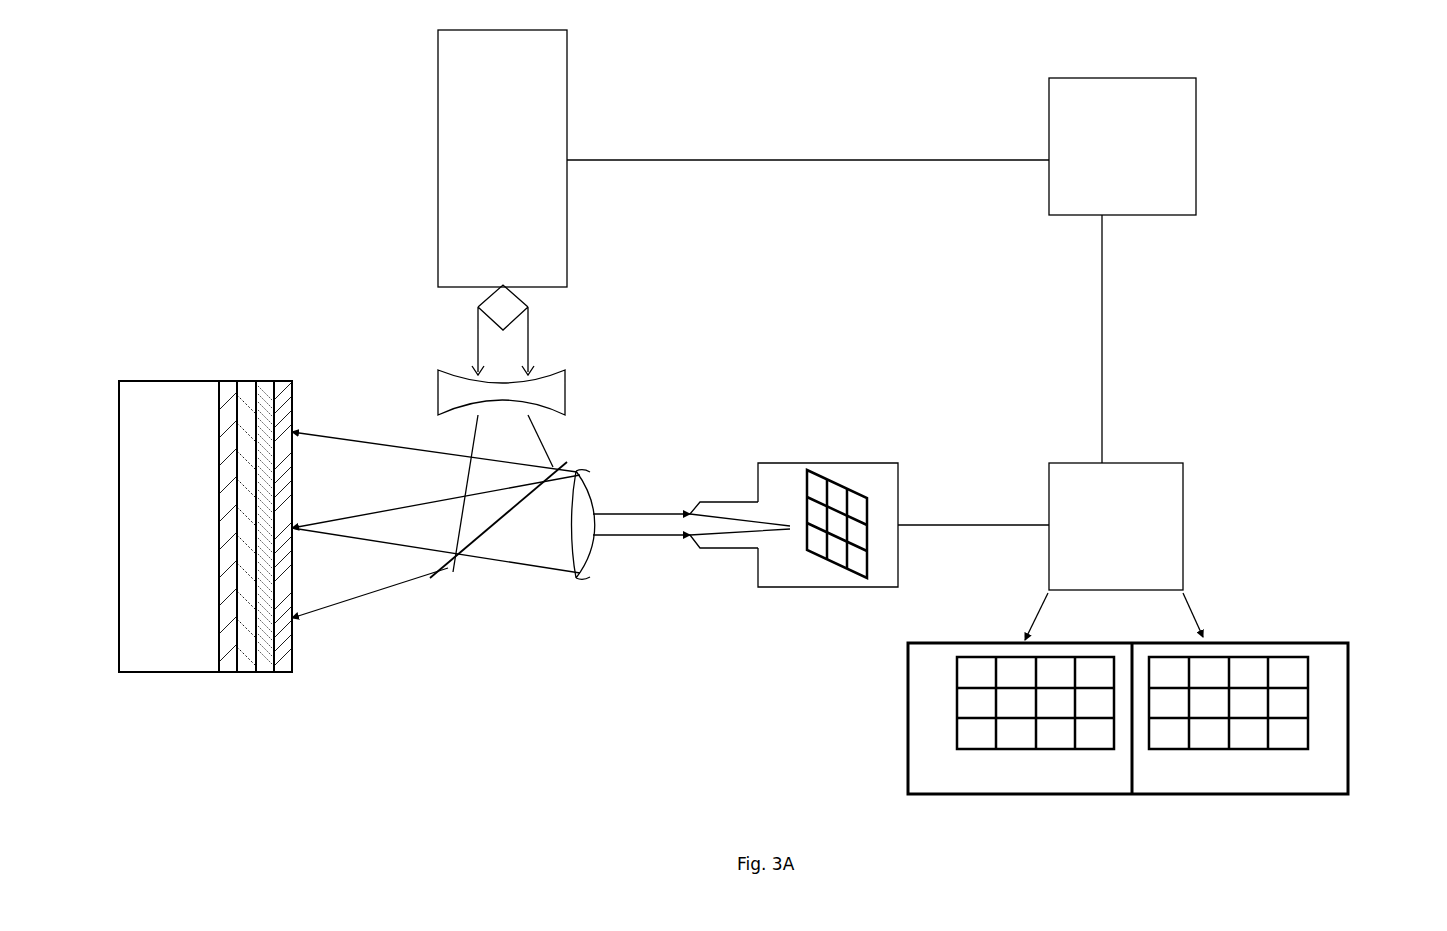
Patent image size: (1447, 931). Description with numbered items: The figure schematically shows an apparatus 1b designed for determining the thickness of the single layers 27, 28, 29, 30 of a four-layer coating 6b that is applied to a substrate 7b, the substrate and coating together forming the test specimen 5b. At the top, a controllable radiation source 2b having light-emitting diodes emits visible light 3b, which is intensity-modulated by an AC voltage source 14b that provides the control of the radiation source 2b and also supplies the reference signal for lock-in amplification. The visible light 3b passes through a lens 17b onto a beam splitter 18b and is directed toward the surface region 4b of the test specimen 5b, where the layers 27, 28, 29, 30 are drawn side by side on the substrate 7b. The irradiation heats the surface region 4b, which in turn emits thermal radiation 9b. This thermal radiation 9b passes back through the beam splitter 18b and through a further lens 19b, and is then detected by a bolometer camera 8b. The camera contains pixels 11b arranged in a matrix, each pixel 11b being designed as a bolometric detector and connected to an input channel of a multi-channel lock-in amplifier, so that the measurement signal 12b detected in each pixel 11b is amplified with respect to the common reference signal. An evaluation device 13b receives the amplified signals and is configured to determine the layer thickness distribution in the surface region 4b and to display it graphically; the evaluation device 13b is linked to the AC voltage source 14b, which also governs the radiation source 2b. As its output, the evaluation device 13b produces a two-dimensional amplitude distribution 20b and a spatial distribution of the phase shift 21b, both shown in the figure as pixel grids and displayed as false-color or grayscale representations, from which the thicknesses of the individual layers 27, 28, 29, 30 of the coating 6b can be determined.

The apparatus 1b is at (236, 175).
The radiation source 2b is at (567, 48).
The visible light 3b is at (532, 330).
The surface region 4b is at (250, 543).
The test specimen 5b is at (215, 501).
The four-layer coating 6b is at (250, 501).
The substrate 7b is at (178, 381).
The bolometer camera 8b is at (775, 460).
The thermal radiation 9b is at (390, 505).
The pixel 11b is at (815, 462).
The measurement signal 12b is at (1150, 505).
The evaluation device 13b is at (1348, 688).
The AC voltage source 14b is at (1196, 130).
The lens 17b is at (565, 383).
The beam splitter 18b is at (455, 575).
The lens 19b is at (585, 545).
The two-dimensional amplitude distribution 20b is at (957, 727).
The spatial distribution of the phase shift 21b is at (1308, 730).
The single layer 27 is at (213, 690).
The single layer 28 is at (250, 672).
The single layer 29 is at (262, 672).
The single layer 30 is at (292, 675).